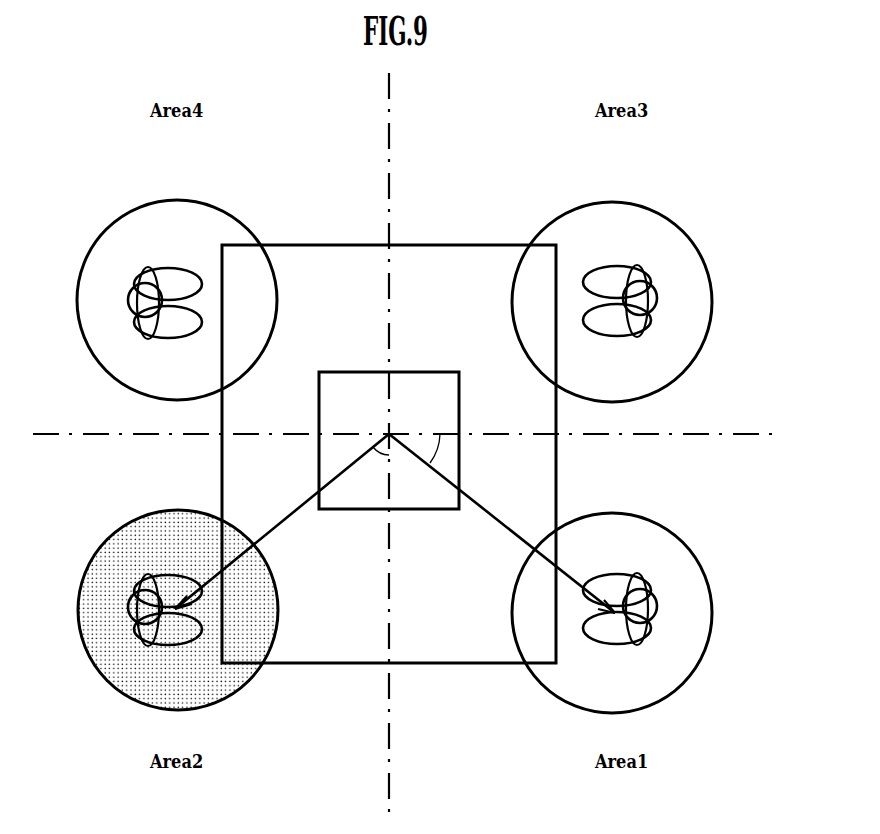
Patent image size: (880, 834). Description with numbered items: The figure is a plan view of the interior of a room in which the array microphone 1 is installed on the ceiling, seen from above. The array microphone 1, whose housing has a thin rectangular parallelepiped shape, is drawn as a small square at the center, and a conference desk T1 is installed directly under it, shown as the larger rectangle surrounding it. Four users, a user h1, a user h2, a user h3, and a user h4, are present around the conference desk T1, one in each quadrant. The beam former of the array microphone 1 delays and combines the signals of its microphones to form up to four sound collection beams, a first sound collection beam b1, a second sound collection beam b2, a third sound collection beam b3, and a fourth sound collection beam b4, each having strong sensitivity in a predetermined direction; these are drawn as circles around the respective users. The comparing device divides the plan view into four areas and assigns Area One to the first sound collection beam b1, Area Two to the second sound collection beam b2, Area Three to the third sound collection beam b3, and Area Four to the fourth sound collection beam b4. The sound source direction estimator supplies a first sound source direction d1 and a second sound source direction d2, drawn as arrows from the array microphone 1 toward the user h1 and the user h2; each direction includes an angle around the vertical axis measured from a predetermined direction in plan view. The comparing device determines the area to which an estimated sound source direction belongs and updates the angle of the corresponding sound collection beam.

The array microphone 1 is at (390, 372).
The conference desk T1 is at (407, 247).
The user h1 is at (642, 606).
The user h2 is at (143, 610).
The user h3 is at (642, 300).
The user h4 is at (143, 303).
The first sound collection beam b1 is at (697, 667).
The second sound collection beam b2 is at (85, 657).
The third sound collection beam b3 is at (683, 385).
The fourth sound collection beam b4 is at (120, 388).
The first sound source direction d1 is at (510, 530).
The second sound source direction d2 is at (272, 528).